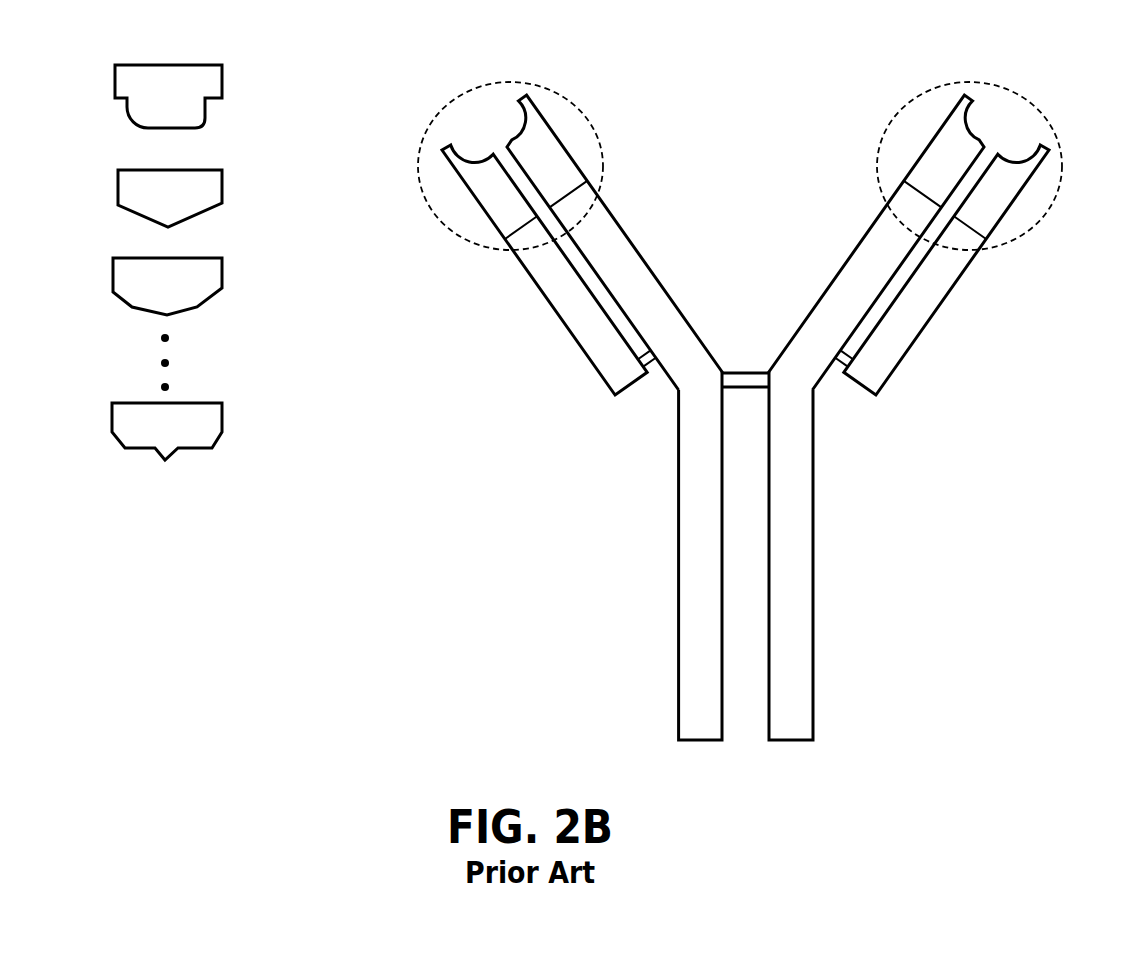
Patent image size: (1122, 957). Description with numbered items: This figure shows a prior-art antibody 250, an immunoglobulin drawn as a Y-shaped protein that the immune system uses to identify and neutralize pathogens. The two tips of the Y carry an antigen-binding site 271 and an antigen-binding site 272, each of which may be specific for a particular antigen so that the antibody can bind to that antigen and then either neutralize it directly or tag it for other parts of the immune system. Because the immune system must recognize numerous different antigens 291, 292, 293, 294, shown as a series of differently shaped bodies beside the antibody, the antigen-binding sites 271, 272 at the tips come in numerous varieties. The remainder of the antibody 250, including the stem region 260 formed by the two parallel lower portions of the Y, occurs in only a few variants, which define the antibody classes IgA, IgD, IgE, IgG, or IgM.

The antibody 250 is at (692, 396).
The constant (Fc) region of antibody 260 is at (783, 570).
The antigen-binding site 271 is at (598, 138).
The antigen-binding site 272 is at (888, 138).
The antigen 291 is at (115, 80).
The antigen 292 is at (118, 187).
The antigen 293 is at (113, 273).
The antigen 294 is at (112, 418).